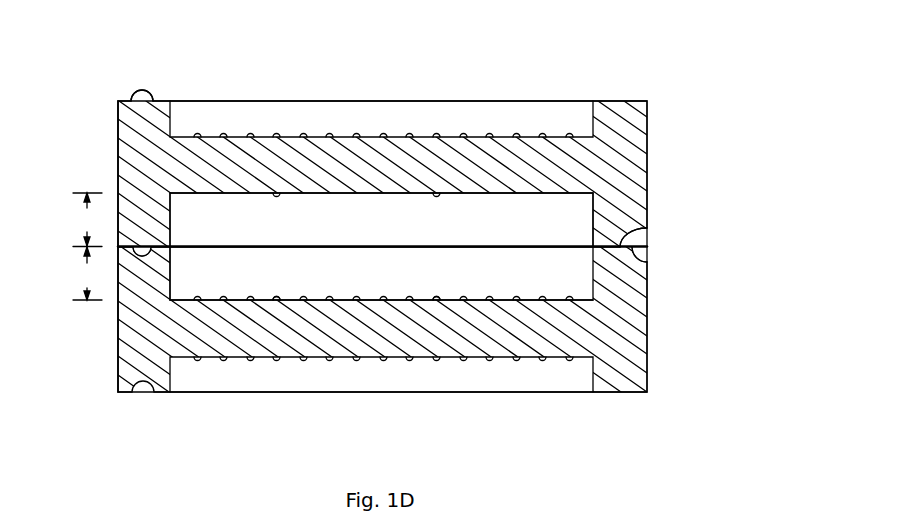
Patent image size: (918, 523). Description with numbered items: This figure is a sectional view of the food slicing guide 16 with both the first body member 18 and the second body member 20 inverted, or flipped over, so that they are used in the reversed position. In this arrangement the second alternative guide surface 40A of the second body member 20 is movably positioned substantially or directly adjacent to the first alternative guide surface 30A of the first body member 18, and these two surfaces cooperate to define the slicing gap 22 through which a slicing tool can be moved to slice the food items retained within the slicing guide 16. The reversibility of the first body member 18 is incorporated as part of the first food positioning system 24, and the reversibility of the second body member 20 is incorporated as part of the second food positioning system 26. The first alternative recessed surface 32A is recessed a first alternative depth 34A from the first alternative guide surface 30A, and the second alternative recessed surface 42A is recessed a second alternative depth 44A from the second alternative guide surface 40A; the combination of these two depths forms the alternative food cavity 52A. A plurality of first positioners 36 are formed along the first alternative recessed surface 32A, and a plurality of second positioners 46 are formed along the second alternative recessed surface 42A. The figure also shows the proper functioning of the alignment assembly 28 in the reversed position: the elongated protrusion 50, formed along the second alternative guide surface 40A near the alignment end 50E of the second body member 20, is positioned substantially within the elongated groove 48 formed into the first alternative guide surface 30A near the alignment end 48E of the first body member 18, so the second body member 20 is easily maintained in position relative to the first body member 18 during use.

The food slicing guide 16 is at (692, 105).
The first body member 18 is at (640, 363).
The second body member 20 is at (640, 180).
The slicing gap 22 is at (647, 246).
The first food positioning system 24 is at (247, 293).
The second food positioning system 26 is at (377, 196).
The alignment assembly 28 is at (138, 90).
The first alternative guide surface 30A is at (638, 235).
The first alternative recessed surface 32A is at (421, 299).
The first alternative depth 34A is at (86, 273).
The first positioners 36 is at (278, 299).
The second alternative guide surface 40A is at (645, 257).
The second alternative recessed surface 42A is at (448, 196).
The second alternative depth 44A is at (86, 220).
The second positioners 46 is at (275, 195).
The elongated groove 48 is at (170, 272).
The alignment end 48E is at (118, 334).
The elongated protrusion 50 is at (143, 252).
The alignment end 50E is at (118, 156).
The alternative food cavity 52A is at (522, 220).